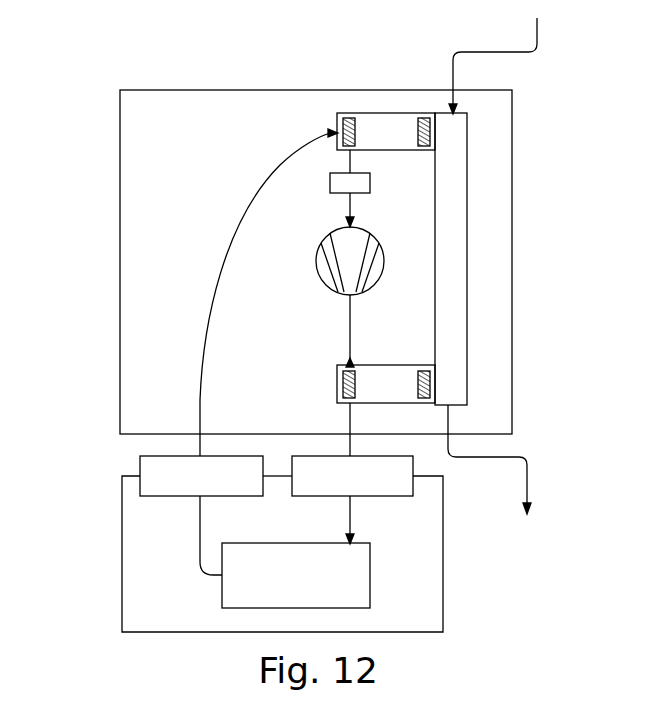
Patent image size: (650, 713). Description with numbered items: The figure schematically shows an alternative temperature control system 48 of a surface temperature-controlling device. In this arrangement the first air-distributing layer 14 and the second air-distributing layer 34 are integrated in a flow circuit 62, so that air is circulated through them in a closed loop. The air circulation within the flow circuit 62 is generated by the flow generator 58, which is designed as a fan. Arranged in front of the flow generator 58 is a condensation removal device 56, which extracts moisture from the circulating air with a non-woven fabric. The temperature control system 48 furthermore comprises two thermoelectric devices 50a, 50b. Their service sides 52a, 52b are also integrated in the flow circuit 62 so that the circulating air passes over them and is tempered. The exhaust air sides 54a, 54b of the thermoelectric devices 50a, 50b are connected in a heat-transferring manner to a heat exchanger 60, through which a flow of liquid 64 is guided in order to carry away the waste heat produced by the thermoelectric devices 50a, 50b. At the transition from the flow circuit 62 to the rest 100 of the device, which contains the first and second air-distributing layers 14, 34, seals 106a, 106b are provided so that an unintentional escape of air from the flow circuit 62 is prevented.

The temperature control system 48 is at (148, 182).
The thermoelectric device 50a is at (414, 101).
The thermoelectric device 50b is at (412, 352).
The service side 52a is at (337, 128).
The service side 52b is at (340, 384).
The exhaust air side 54a is at (432, 135).
The exhaust air side 54b is at (434, 372).
The condensation removal device 56 is at (330, 189).
The flow generator 58 is at (323, 282).
The heat exchanger 60 is at (440, 278).
The flow circuit 62 is at (208, 333).
The flow of liquid 64 is at (518, 53).
The rest 100 is at (228, 544).
The seal 106a is at (352, 476).
The seal 106b is at (201, 476).
The first air-distributing layer 14 is at (296, 575).
The second air-distributing layer 34 is at (296, 575).